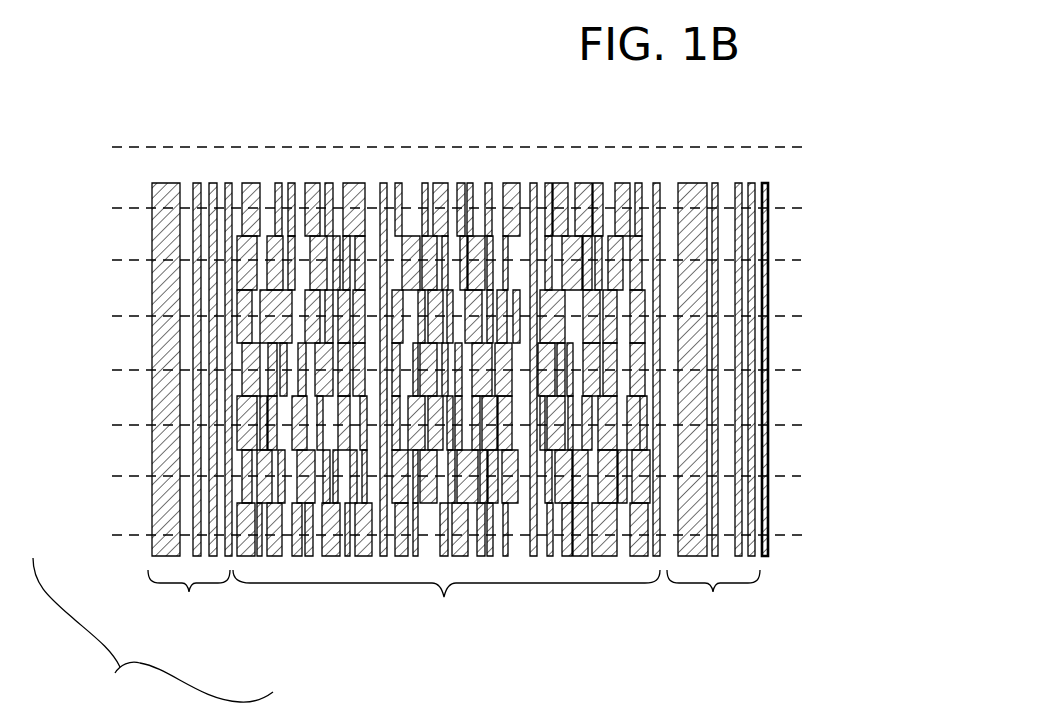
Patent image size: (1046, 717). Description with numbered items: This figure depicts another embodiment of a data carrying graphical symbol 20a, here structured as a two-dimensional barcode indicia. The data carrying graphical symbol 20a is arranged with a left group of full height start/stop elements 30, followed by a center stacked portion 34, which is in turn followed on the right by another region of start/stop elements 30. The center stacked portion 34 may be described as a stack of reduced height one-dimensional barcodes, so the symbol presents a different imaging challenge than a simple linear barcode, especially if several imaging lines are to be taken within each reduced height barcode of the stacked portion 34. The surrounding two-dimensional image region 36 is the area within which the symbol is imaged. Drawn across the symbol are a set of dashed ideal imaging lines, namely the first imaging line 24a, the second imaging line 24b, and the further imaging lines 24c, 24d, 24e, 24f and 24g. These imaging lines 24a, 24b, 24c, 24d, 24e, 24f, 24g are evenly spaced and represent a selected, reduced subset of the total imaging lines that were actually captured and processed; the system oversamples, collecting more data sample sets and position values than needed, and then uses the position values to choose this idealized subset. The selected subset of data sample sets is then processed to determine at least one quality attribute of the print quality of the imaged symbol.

The data carrying graphical symbol 20a is at (792, 182).
The first imaging line 24a is at (118, 204).
The second imaging line 24b is at (801, 256).
The imaging line 24c is at (118, 312).
The imaging line 24d is at (801, 366).
The imaging line 24e is at (118, 421).
The imaging line 24f is at (801, 472).
The imaging line 24g is at (118, 531).
The start/stop elements 30 is at (190, 592).
The 2D stacked portion 34 is at (457, 587).
The 2D image region 36 is at (153, 631).